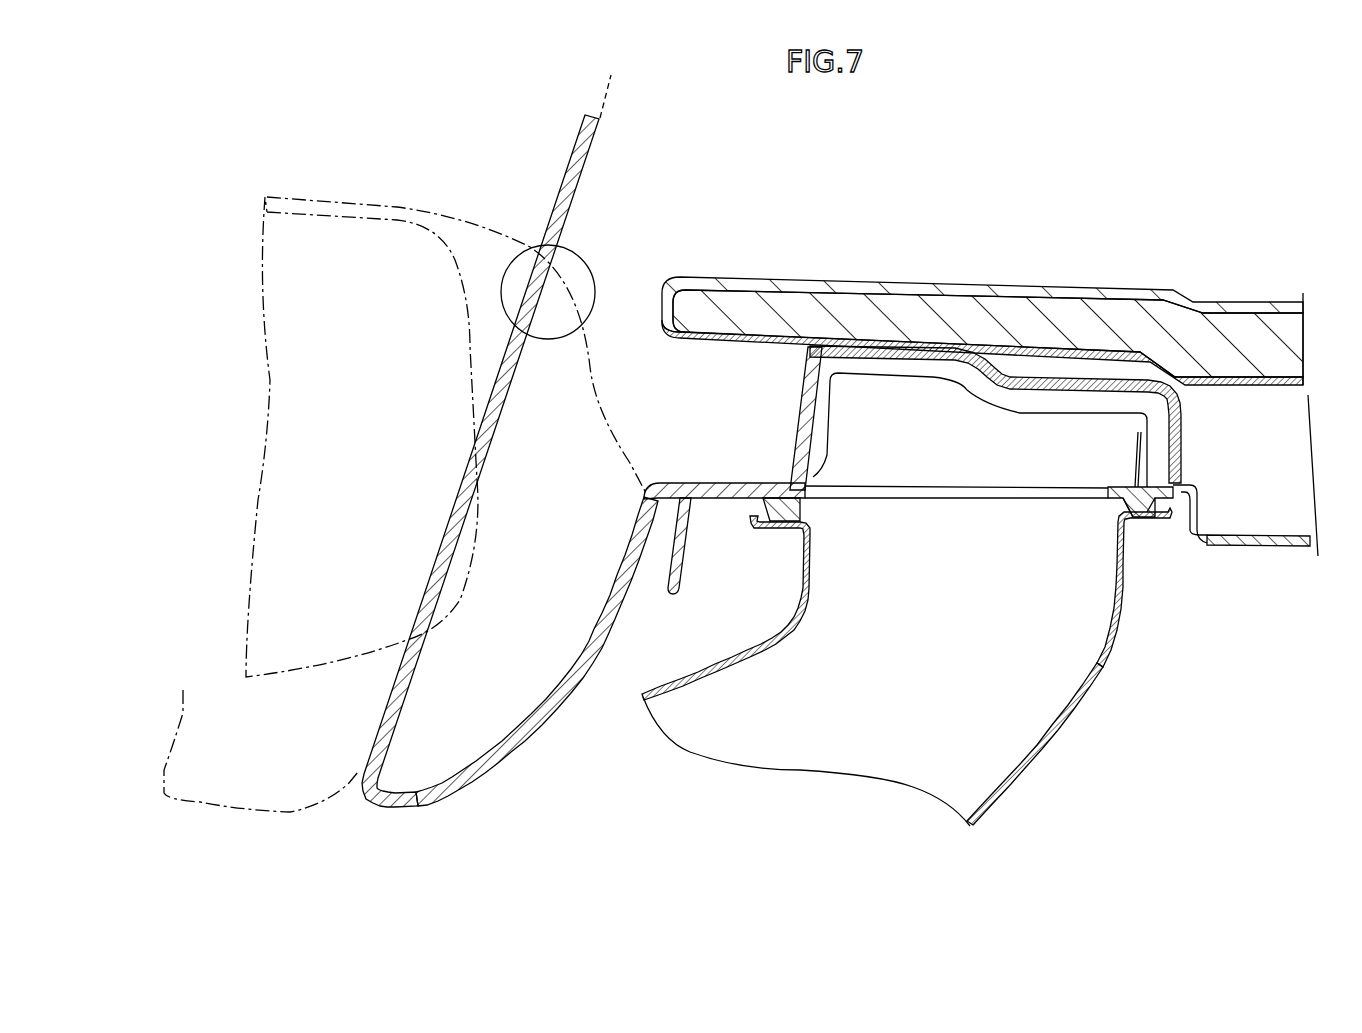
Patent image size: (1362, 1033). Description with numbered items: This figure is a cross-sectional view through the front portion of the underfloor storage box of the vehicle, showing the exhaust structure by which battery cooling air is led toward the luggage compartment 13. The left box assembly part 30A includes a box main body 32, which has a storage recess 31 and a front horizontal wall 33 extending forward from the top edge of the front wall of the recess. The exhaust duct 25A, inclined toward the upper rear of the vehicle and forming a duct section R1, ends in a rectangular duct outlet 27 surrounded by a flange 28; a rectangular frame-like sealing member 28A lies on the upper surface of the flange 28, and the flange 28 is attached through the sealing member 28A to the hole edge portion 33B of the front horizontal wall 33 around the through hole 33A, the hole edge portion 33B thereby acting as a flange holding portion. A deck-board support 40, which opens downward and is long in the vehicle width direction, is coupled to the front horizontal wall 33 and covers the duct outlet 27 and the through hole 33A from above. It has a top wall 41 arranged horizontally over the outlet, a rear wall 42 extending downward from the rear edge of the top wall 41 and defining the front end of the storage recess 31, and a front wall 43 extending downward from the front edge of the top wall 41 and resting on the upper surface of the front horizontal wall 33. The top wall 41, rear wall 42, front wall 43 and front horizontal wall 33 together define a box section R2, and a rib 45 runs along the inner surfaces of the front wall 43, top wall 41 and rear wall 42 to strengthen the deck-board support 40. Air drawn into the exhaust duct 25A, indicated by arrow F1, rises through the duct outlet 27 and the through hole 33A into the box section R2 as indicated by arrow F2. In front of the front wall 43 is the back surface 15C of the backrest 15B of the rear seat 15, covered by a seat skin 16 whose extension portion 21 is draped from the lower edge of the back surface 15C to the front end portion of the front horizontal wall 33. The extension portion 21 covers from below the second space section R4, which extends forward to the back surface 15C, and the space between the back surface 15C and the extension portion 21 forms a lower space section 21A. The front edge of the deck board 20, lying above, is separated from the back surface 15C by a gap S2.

The luggage compartment 13 is at (985, 160).
The rear seat 15 is at (527, 67).
The backrest 15B is at (588, 95).
The back surface 15C is at (564, 248).
The seat skin 16 is at (583, 175).
The deck board 20 is at (1243, 327).
The extension portion 21 is at (573, 687).
The lower space section 21A is at (603, 610).
The exhaust duct 25A is at (1050, 743).
The duct outlet 27 is at (1117, 523).
The flange 28 is at (1141, 522).
The sealing member 28A is at (1157, 512).
The left box assembly part 30A is at (1250, 557).
The storage recess 31 is at (1235, 497).
The box main body 32 is at (1287, 546).
The front horizontal wall 33 is at (756, 483).
The through hole 33A is at (803, 573).
The hole edge portion 33B is at (1153, 487).
The deck-board support 40 is at (1020, 377).
The top wall 41 is at (907, 305).
The rear wall 42 is at (1207, 392).
The front wall 43 is at (800, 400).
The rib 45 is at (1090, 405).
The gap S2 is at (557, 467).
The second space section R4 is at (707, 290).
The box section R2 is at (925, 438).
The duct section R1 is at (945, 750).
The arrow F1 is at (810, 755).
The arrow F2 is at (944, 457).